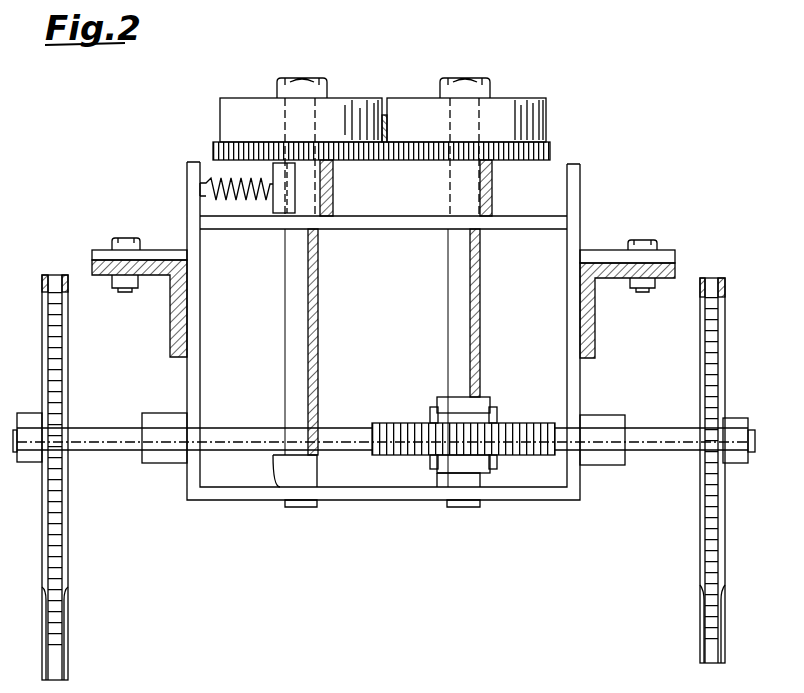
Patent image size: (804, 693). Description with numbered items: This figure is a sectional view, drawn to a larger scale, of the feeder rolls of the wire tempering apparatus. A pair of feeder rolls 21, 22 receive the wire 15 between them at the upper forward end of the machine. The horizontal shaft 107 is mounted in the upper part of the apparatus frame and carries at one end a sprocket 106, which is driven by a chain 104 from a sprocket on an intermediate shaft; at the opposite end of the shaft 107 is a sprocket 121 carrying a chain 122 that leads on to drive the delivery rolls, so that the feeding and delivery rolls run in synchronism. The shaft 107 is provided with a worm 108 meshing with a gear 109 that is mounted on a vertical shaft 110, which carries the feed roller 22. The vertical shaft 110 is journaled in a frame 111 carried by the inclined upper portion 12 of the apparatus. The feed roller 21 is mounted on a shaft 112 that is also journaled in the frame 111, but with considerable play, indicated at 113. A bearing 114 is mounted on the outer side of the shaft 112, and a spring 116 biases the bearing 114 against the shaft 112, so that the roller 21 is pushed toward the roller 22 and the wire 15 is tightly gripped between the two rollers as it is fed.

The inclined upper portion 12 is at (163, 290).
The wire 15 is at (385, 120).
The feeder roll 21 is at (225, 98).
The feeder roll 22 is at (520, 98).
The chain 104 is at (700, 634).
The sprocket 106 is at (712, 548).
The shaft 107 is at (653, 456).
The worm 108 is at (425, 422).
The gear 109 is at (405, 430).
The vertical shaft 110 is at (455, 322).
The frame 111 is at (578, 204).
The shaft 112 is at (286, 368).
The play 113 is at (320, 190).
The bearing 114 is at (282, 208).
The spring 116 is at (210, 180).
The sprocket 121 is at (53, 548).
The chain 122 is at (68, 627).